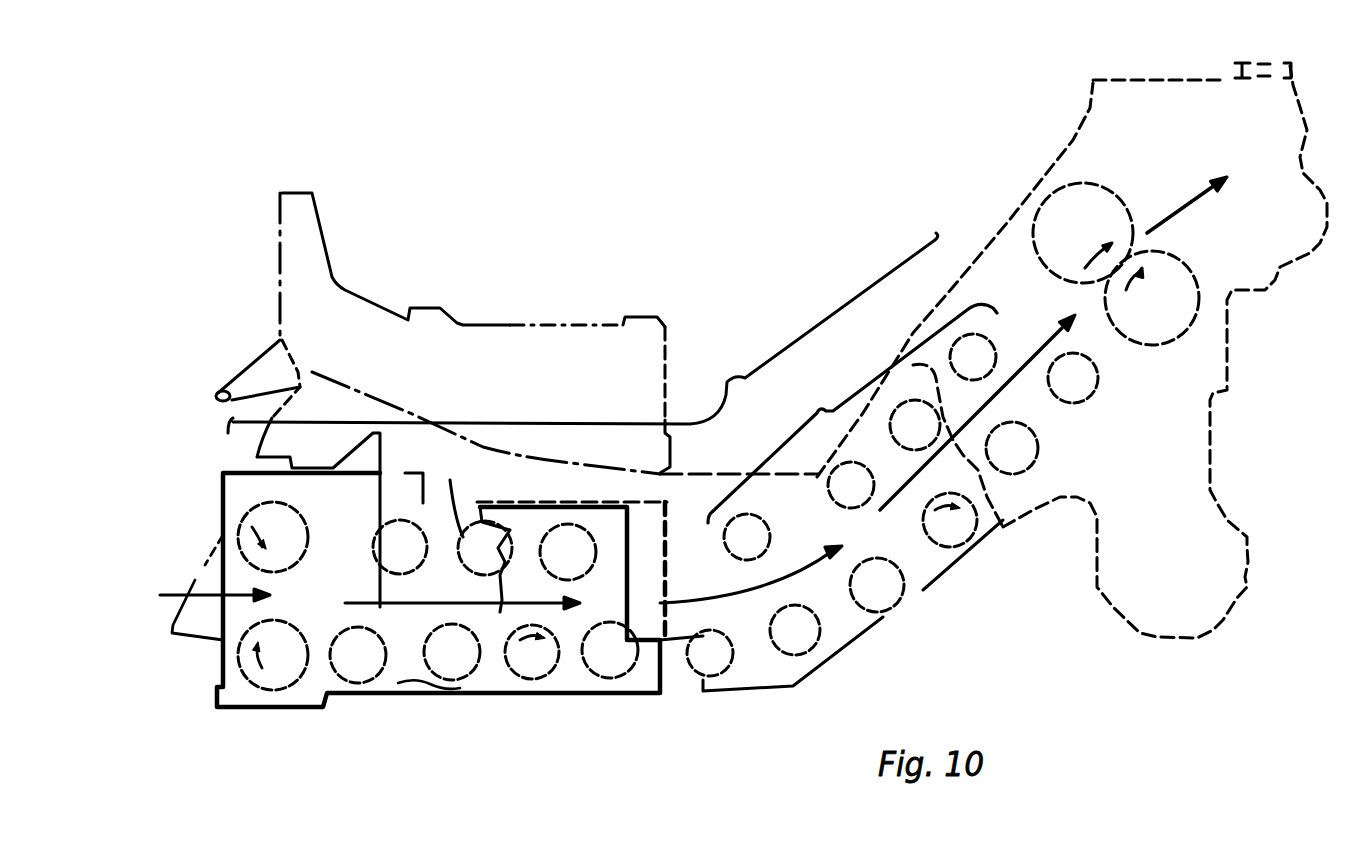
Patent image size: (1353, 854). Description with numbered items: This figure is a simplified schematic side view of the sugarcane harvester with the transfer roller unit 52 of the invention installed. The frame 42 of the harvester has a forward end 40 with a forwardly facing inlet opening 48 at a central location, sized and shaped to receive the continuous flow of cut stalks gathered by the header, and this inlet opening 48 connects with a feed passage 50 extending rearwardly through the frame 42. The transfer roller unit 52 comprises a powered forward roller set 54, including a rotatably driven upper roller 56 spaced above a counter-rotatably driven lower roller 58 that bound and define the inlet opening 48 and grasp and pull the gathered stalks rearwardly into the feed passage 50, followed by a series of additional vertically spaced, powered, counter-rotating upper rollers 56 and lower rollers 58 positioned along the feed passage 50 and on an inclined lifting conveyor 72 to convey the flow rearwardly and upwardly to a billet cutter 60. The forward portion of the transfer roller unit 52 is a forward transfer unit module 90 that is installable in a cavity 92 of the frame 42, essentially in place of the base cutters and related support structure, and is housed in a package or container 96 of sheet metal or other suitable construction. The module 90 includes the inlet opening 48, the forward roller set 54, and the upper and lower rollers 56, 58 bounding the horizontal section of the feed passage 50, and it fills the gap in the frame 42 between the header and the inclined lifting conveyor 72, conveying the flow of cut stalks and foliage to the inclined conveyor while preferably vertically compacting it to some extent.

The forward end 40 is at (187, 637).
The frame 42 is at (967, 560).
The inlet opening 48 is at (220, 570).
The feed passage 50 is at (577, 400).
The transfer roller unit 52 is at (577, 400).
The forward roller set 54 is at (253, 688).
The upper roller 56 is at (295, 512).
The lower roller 58 is at (423, 667).
The billet cutter 60 is at (1058, 186).
The inclined lifting conveyor 72 is at (820, 416).
The forward transfer unit module 90 is at (633, 705).
The cavity 92 is at (683, 680).
The container 96 is at (307, 707).